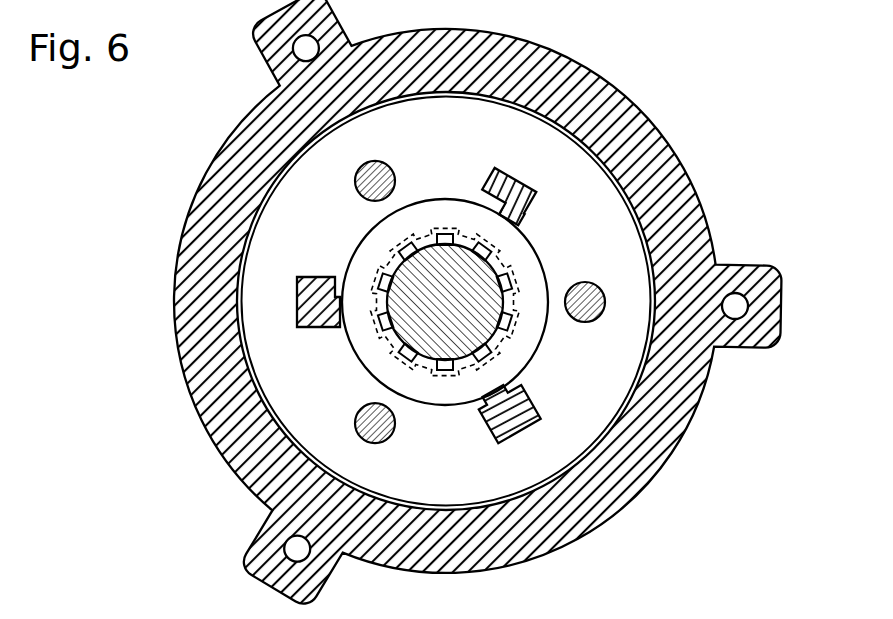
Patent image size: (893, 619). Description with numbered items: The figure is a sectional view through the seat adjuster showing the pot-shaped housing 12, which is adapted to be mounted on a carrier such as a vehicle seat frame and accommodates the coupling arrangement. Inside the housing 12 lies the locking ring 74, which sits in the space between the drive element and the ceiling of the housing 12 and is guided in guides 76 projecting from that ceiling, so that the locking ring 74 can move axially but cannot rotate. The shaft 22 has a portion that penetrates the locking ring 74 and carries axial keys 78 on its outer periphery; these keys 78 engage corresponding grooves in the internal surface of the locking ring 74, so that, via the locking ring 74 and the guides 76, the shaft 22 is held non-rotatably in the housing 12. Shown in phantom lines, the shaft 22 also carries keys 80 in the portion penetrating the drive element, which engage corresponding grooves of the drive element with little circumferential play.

The housing 12 is at (174, 258).
The shaft 22 is at (447, 328).
The locking ring 74 is at (362, 247).
The guides 76 is at (527, 202).
The axial keys 78 is at (360, 347).
The keys 80 is at (508, 345).